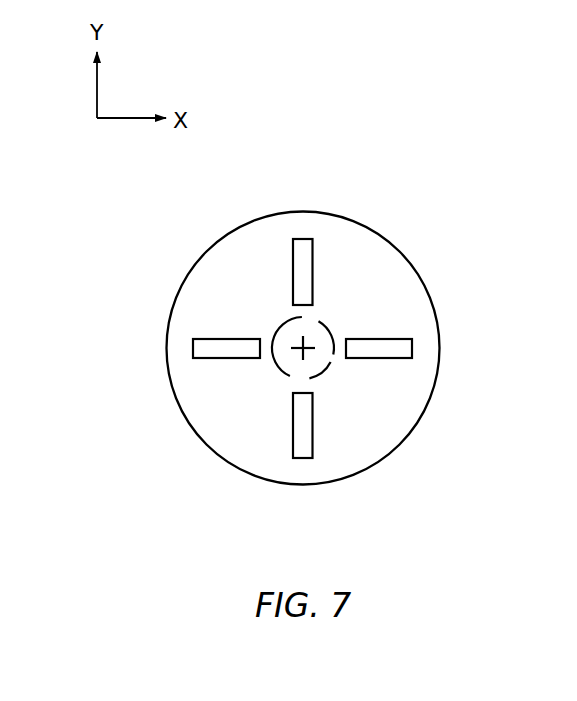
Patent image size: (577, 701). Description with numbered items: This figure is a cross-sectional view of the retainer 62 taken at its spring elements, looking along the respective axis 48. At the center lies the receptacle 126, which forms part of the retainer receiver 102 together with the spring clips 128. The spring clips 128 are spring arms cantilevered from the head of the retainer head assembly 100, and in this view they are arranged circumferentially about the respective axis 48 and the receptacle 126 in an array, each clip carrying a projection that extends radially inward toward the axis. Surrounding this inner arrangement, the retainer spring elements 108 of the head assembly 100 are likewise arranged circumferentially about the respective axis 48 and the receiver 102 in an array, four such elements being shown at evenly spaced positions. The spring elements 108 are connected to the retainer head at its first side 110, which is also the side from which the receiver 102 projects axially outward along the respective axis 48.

The retainer 62 is at (402, 204).
The retainer head assembly 100 is at (431, 276).
The first side of the retainer head 110 is at (403, 318).
The retainer spring elements 108 is at (303, 239).
The spring clips 128 is at (283, 327).
The receptacle 126 is at (314, 324).
The retainer receiver 102 is at (332, 378).
The respective axis 48 is at (292, 362).